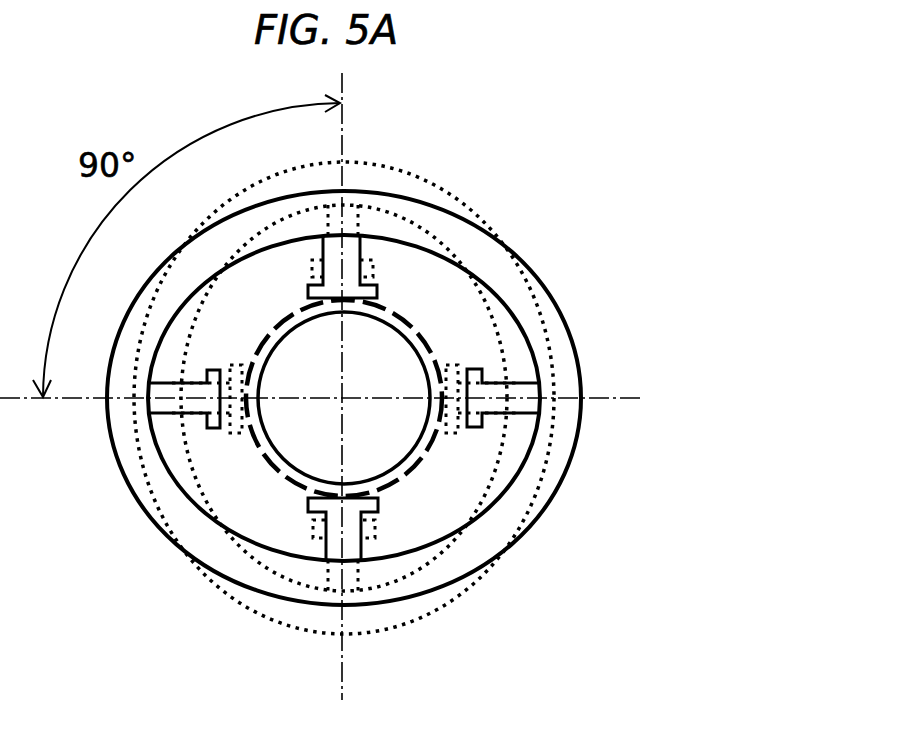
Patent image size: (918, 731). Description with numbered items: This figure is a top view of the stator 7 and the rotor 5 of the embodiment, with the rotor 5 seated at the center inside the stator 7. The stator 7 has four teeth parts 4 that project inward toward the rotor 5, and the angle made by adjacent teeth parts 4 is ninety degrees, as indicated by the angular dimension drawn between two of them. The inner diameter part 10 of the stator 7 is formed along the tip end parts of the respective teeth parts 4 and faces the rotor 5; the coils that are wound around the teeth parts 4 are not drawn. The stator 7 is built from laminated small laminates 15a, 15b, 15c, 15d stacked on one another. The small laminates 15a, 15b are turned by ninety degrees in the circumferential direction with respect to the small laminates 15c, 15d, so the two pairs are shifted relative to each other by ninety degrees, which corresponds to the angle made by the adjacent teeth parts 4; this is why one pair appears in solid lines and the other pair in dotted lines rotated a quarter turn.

The teeth parts 4 is at (337, 552).
The rotor 5 is at (410, 452).
The stator 7 is at (498, 237).
The inner diameter part 10 is at (273, 468).
The small laminate 15a is at (446, 398).
The small laminate 15b is at (557, 307).
The small laminate 15c is at (382, 345).
The small laminate 15d is at (407, 172).